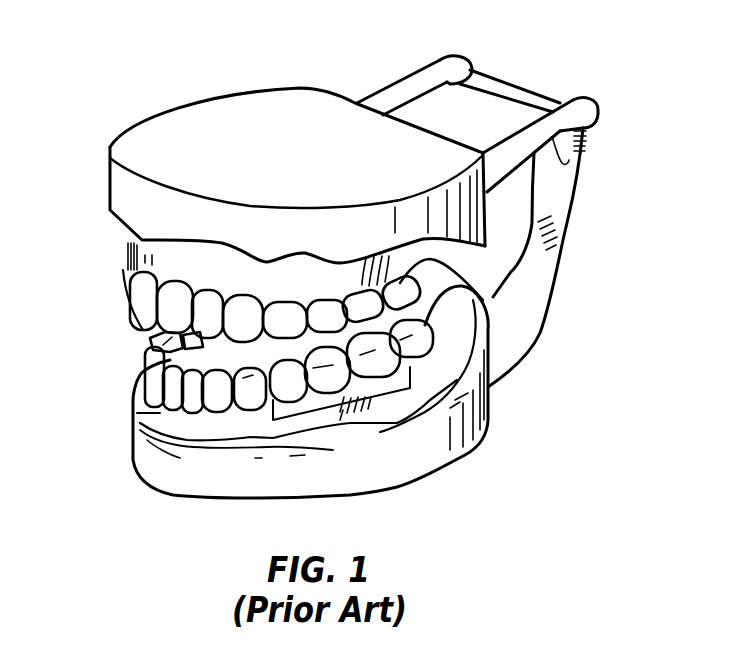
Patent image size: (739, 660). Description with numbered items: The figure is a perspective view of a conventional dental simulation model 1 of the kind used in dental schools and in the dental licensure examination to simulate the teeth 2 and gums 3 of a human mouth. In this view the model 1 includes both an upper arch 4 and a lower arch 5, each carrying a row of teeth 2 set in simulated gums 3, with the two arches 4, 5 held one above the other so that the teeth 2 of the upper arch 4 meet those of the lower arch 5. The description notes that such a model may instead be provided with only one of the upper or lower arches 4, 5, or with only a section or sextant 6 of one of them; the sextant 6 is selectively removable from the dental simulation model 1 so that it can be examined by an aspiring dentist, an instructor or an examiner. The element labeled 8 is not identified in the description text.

The dental simulation model 1 is at (560, 60).
The teeth 2 is at (125, 295).
The gums 3 is at (160, 413).
The upper arch 4 is at (110, 183).
The lower arch 5 is at (360, 470).
The sextant 6 is at (370, 387).
The articulator hinge arm 8 is at (483, 300).